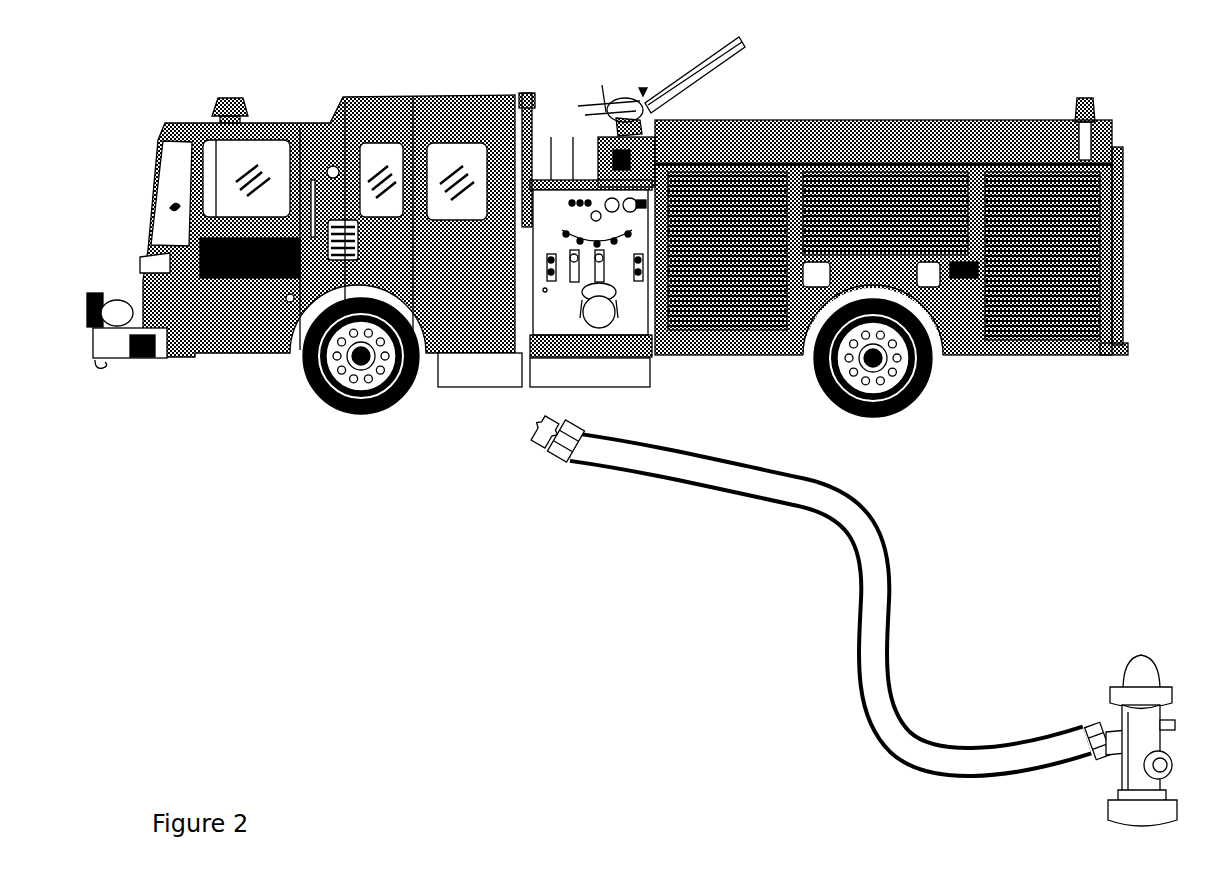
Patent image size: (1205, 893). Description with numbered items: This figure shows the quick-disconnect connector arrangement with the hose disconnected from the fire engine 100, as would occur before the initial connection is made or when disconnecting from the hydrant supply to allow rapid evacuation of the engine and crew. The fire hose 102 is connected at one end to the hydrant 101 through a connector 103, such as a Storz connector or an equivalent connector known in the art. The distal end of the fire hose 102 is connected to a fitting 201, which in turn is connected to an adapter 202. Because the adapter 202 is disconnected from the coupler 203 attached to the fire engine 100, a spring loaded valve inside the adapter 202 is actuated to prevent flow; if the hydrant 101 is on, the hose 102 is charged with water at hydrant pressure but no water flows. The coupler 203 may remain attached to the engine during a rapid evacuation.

The fire engine 100 is at (805, 103).
The hydrant 101 is at (1141, 661).
The fire hose 102 is at (864, 678).
The connector 103 is at (1098, 723).
The fitting 201 is at (563, 464).
The adapter 202 is at (537, 436).
The coupler 203 is at (587, 350).